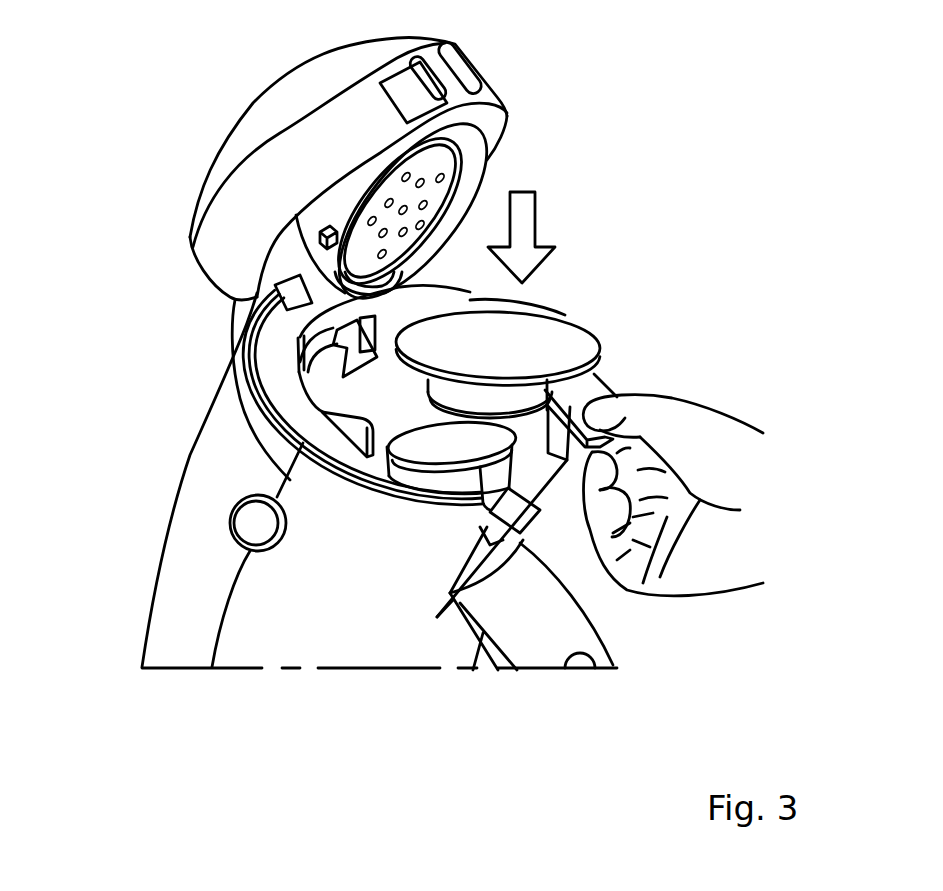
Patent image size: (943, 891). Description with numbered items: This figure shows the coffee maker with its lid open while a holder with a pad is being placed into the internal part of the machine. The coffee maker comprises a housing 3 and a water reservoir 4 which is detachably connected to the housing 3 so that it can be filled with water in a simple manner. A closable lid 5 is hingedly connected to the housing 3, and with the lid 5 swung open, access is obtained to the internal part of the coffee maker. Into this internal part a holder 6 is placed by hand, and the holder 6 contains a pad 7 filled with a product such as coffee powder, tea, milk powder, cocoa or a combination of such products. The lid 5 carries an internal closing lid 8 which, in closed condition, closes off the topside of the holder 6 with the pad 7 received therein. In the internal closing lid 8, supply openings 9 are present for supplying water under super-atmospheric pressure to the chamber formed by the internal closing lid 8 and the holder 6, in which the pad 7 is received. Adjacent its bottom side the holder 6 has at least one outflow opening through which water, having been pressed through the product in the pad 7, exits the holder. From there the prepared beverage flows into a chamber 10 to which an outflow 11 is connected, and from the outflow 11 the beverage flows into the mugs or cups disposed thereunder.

The housing 3 is at (273, 628).
The water reservoir 4 is at (195, 552).
The closable lid 5 is at (478, 80).
The holder 6 is at (480, 398).
The pad 7 is at (542, 342).
The internal closing lid 8 is at (443, 153).
The supply openings 9 is at (450, 212).
The chamber 10 is at (392, 412).
The outflow 11 is at (542, 635).